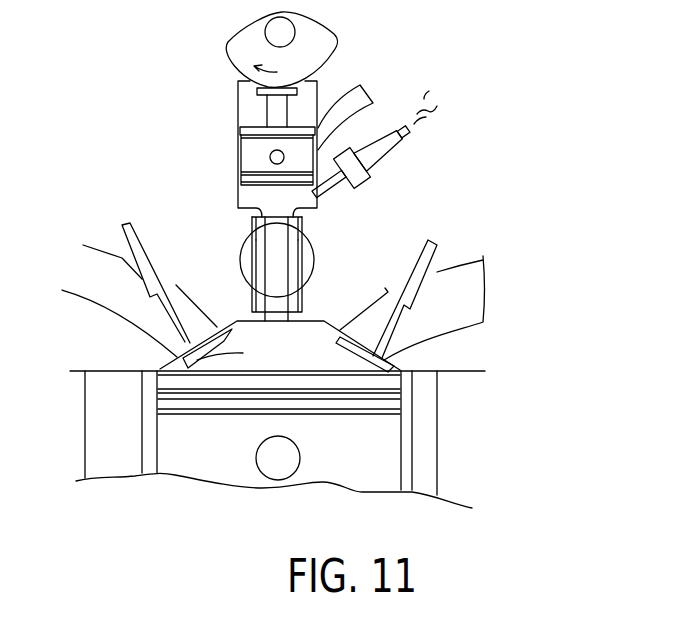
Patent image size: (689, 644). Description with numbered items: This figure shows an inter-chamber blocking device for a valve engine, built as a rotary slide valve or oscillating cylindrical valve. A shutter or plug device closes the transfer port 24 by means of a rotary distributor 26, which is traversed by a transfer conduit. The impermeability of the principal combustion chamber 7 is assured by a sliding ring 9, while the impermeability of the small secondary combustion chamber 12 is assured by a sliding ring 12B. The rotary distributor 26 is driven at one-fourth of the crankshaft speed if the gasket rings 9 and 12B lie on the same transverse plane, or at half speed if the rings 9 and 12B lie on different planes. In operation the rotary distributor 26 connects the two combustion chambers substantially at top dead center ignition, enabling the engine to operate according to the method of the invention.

The small secondary combustion chamber 12 is at (242, 197).
The sliding ring 12B is at (242, 222).
The sliding ring 9 is at (262, 310).
The rotary distributor 26 is at (302, 250).
The transfer port 24 is at (287, 316).
The principal combustion chamber 7 is at (200, 356).